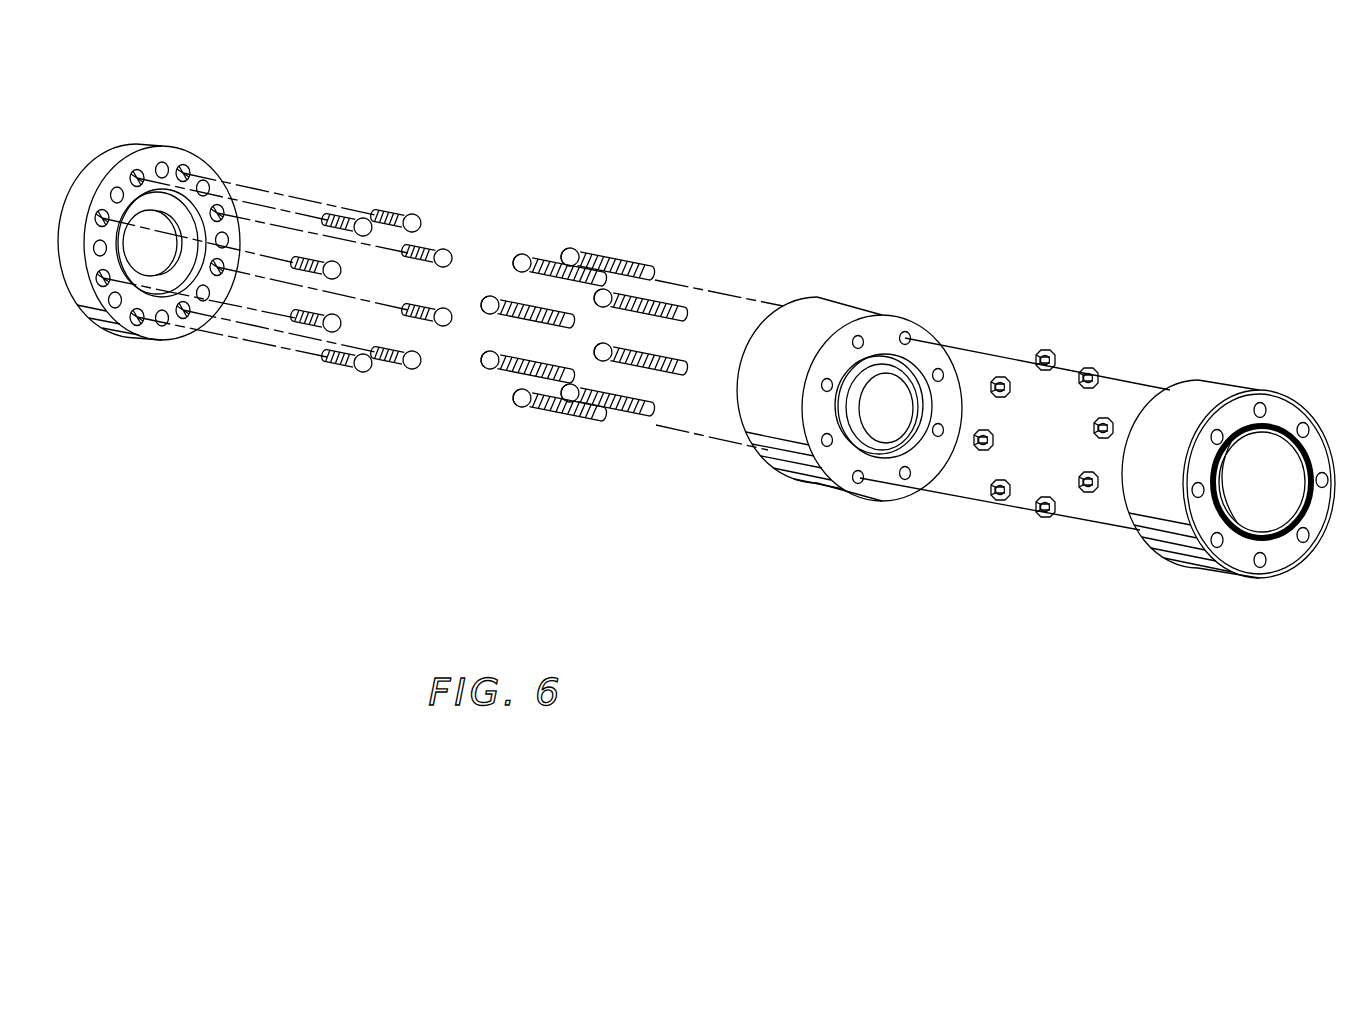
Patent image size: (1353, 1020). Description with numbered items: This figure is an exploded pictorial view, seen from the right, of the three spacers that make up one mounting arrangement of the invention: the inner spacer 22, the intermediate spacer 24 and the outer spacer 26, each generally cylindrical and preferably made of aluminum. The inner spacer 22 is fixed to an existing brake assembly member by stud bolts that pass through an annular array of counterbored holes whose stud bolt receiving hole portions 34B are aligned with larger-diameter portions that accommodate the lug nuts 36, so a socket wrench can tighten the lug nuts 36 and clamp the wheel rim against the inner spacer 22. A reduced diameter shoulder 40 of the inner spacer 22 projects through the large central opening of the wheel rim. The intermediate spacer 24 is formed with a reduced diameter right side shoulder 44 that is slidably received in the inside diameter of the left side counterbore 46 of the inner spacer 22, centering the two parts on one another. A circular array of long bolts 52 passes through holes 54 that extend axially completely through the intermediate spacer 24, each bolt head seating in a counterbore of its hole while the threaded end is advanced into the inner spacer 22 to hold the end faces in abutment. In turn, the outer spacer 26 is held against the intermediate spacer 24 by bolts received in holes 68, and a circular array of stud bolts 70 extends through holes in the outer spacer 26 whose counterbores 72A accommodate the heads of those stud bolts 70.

The inner spacer 22 is at (1196, 378).
The intermediate spacer 24 is at (831, 298).
The outer spacer 26 is at (137, 146).
The stud bolt receiving hole portions 34B is at (1302, 423).
The lug nuts 36 is at (1084, 374).
The reduced diameter shoulder 40 is at (1238, 428).
The reduced diameter right side shoulder 44 is at (898, 360).
The left side counterbore 46 is at (1243, 530).
The long bolts 52 is at (596, 254).
The holes 54 is at (825, 445).
The holes 68 is at (165, 166).
The stud bolts 70 is at (378, 216).
The counterbores 72A is at (138, 325).